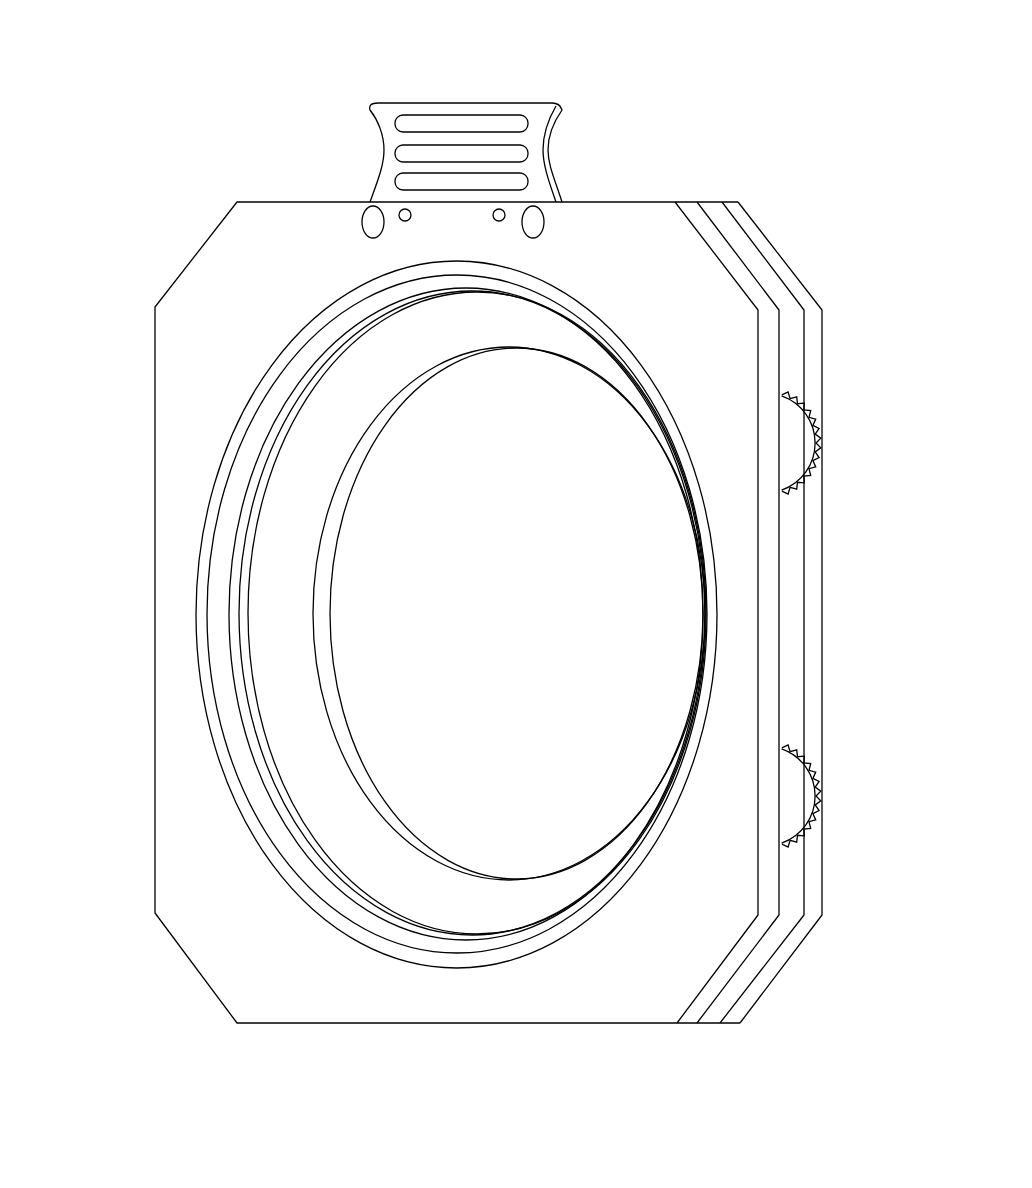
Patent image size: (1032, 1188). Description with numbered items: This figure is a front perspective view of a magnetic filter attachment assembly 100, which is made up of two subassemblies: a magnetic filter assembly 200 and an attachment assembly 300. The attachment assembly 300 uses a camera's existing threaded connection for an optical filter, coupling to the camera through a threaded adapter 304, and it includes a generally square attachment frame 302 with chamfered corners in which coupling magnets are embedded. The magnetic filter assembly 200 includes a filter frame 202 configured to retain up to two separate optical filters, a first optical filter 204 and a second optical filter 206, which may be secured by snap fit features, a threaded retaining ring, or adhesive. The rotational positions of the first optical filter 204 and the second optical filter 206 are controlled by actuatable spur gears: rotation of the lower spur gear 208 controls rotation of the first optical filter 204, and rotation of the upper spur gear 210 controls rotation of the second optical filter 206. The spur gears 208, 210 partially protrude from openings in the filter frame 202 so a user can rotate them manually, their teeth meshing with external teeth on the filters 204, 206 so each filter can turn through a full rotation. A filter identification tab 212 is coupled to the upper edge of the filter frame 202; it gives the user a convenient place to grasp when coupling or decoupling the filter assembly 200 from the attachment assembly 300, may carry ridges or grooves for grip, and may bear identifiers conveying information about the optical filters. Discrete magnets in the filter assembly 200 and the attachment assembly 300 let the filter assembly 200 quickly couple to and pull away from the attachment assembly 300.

The magnetic filter attachment assembly 100 is at (128, 112).
The magnetic filter assembly 200 is at (125, 695).
The filter frame 202 is at (178, 835).
The first optical filter 204 is at (205, 593).
The second optical filter 206 is at (265, 491).
The lower spur gear 208 is at (835, 785).
The upper spur gear 210 is at (835, 432).
The filter identification tab 212 is at (590, 143).
The attachment assembly 300 is at (815, 250).
The attachment frame 302 is at (788, 603).
The threaded adapter 304 is at (378, 858).